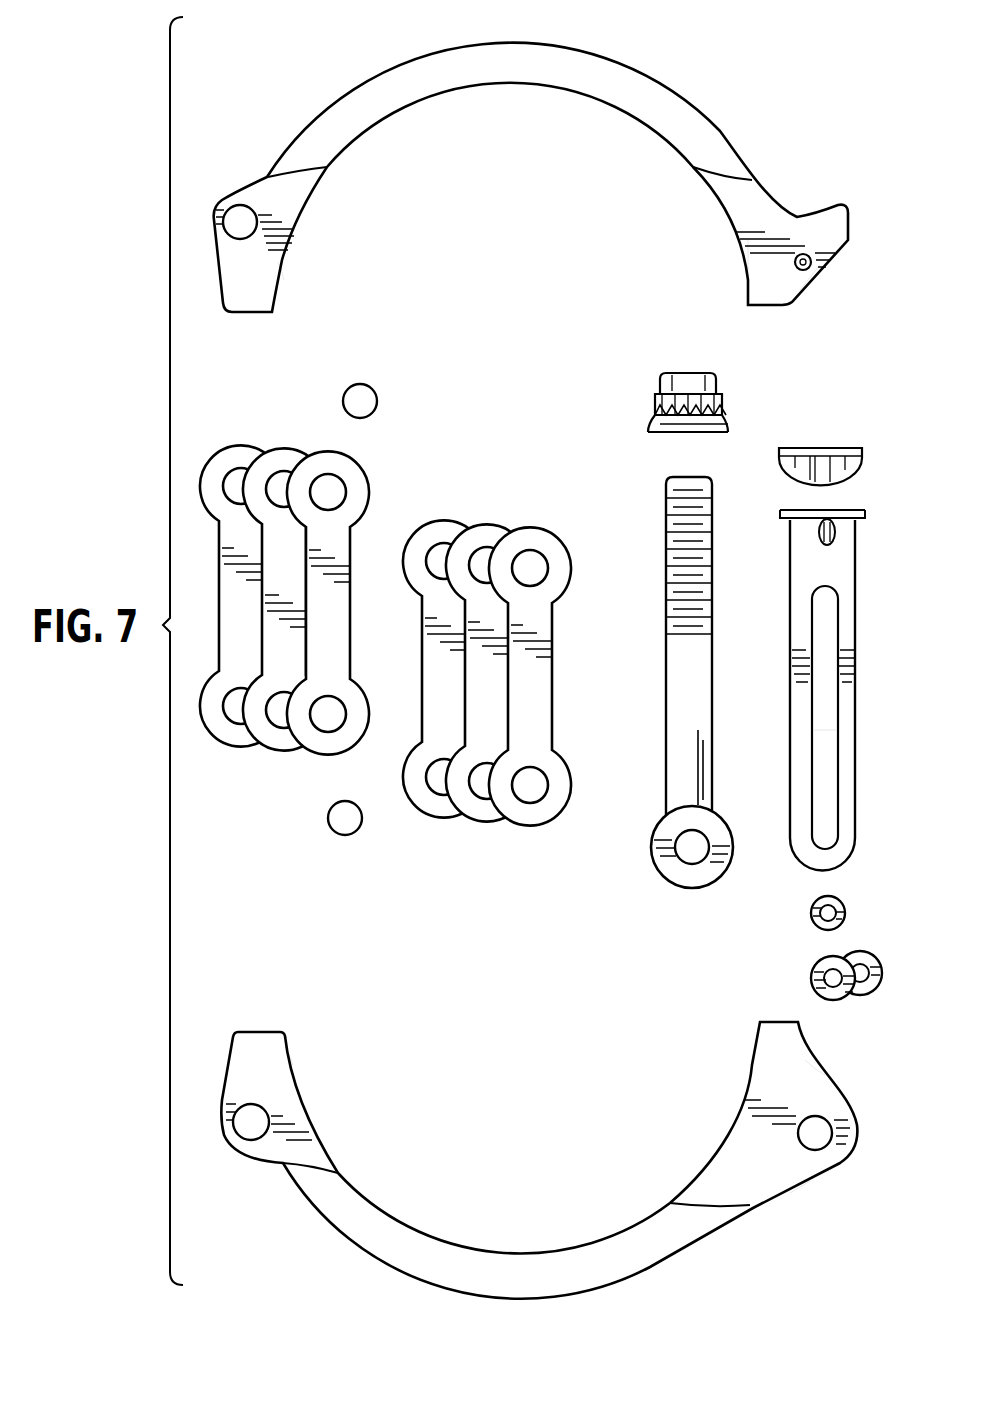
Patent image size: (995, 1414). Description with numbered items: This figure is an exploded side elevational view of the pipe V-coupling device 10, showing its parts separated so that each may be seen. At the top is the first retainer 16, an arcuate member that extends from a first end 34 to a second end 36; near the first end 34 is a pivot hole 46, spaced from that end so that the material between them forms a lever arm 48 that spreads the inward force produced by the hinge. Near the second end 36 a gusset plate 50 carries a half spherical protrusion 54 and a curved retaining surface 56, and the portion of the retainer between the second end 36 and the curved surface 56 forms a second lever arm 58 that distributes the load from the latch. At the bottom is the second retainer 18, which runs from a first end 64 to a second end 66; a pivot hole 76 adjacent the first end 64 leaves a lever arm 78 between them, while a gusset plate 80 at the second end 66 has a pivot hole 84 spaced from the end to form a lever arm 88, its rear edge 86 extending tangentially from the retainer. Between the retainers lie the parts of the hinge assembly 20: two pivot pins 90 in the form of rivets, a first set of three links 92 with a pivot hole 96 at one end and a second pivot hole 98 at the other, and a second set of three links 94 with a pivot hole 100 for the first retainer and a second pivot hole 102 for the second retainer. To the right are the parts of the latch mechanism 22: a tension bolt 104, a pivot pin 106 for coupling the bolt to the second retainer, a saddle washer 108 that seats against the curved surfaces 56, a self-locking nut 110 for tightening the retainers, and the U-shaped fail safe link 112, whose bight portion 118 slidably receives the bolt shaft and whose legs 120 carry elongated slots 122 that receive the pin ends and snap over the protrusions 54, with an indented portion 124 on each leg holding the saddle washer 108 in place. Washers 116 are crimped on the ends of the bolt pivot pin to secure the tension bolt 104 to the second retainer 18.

The pipe V-coupling device 10 is at (760, 83).
The first retainer 16 is at (540, 184).
The second retainer 18 is at (547, 1127).
The hinge assembly 20 is at (401, 612).
The latch mechanism 22 is at (723, 678).
The first end 34 is at (250, 318).
The second end 36 is at (762, 307).
The pivot hole 46 is at (255, 217).
The lever arm 48 is at (280, 268).
The gusset plate 50 is at (800, 295).
The half spherical protrusion 54 is at (810, 268).
The curved retaining surface 56 is at (795, 210).
The lever arm 58 is at (745, 268).
The first end 64 is at (258, 1030).
The second end 66 is at (770, 1020).
The pivot hole 76 is at (262, 1110).
The lever arm 78 is at (292, 1053).
The gusset plate 80 is at (830, 1075).
The pivot hole 84 is at (823, 1148).
The rear edge 86 is at (800, 1195).
The lever arm 88 is at (752, 1060).
The pivot pin 90 is at (372, 390).
The first set of links 92 is at (503, 678).
The second set of links 94 is at (327, 568).
The pivot hole 96 is at (545, 567).
The second pivot hole 98 is at (545, 792).
The pivot hole 100 is at (345, 490).
The second pivot hole 102 is at (345, 714).
The tension bolt 104 is at (666, 702).
The pivot pin 106 is at (812, 912).
The saddle washer 108 is at (855, 477).
The self-locking nut 110 is at (652, 420).
The fail safe link 112 is at (790, 672).
The washer 116 is at (838, 956).
The bight portion 118 is at (800, 508).
The leg 120 is at (790, 676).
The elongated slot 122 is at (830, 748).
The indented portion 124 is at (815, 533).